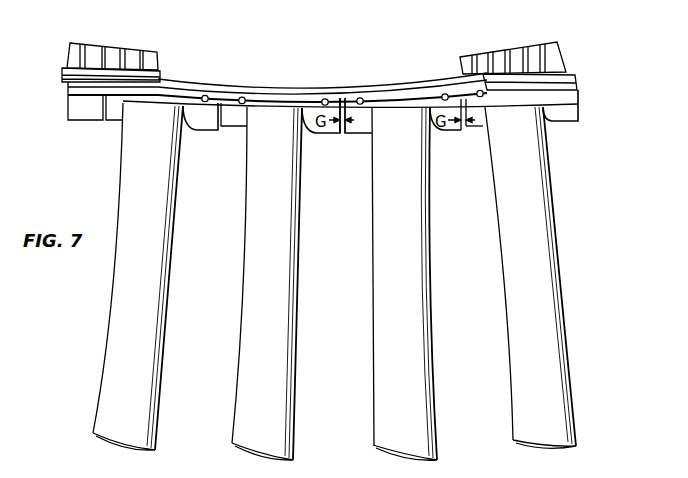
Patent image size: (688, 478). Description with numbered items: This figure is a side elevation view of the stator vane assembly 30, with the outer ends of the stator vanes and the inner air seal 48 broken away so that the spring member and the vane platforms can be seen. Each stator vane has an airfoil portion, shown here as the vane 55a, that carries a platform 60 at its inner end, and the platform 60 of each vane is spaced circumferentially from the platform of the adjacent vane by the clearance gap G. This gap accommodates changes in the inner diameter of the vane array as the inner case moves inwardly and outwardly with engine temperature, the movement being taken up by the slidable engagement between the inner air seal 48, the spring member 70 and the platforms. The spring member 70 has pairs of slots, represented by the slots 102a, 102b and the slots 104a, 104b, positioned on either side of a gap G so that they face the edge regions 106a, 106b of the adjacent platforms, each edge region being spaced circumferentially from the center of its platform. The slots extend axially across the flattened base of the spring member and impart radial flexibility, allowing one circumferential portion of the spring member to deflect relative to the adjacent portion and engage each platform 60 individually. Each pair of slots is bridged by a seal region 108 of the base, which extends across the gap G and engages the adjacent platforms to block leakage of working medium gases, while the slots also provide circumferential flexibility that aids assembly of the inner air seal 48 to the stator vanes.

The stator vane assembly 30 is at (92, 141).
The inner air seal 48 is at (556, 45).
The blade 55a is at (249, 267).
The platform 60 is at (200, 129).
The retaining ring 70 is at (217, 82).
The slot 102a is at (322, 99).
The slot 102b is at (359, 97).
The slot 104a is at (442, 95).
The slot 104b is at (483, 90).
The edge region 106a is at (320, 134).
The edge region 106b is at (347, 134).
The seal region 108 is at (344, 103).